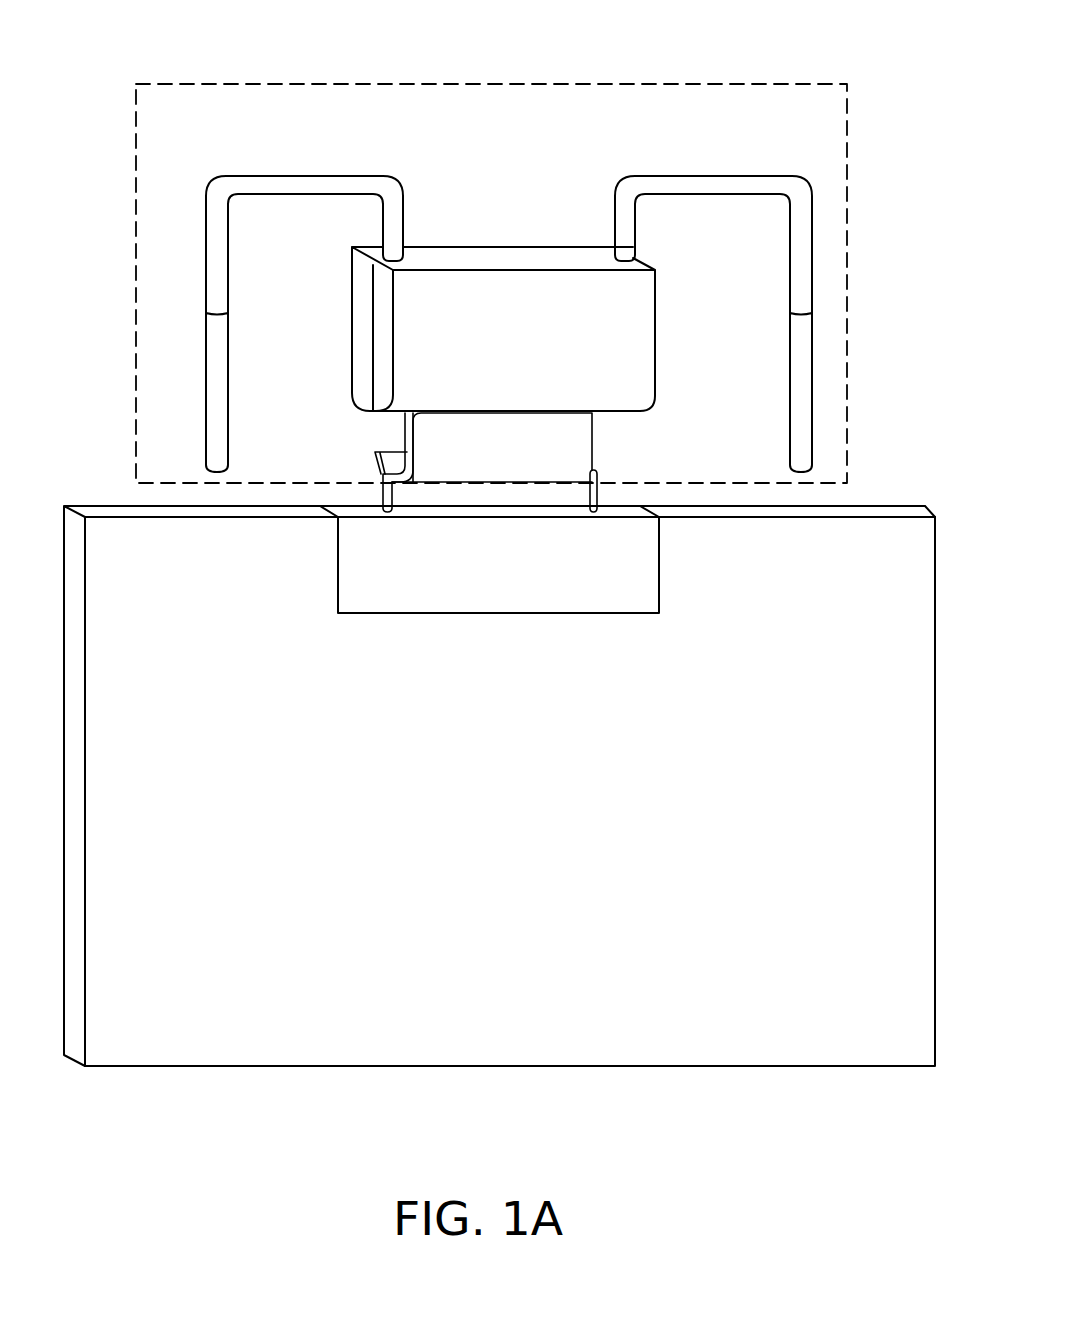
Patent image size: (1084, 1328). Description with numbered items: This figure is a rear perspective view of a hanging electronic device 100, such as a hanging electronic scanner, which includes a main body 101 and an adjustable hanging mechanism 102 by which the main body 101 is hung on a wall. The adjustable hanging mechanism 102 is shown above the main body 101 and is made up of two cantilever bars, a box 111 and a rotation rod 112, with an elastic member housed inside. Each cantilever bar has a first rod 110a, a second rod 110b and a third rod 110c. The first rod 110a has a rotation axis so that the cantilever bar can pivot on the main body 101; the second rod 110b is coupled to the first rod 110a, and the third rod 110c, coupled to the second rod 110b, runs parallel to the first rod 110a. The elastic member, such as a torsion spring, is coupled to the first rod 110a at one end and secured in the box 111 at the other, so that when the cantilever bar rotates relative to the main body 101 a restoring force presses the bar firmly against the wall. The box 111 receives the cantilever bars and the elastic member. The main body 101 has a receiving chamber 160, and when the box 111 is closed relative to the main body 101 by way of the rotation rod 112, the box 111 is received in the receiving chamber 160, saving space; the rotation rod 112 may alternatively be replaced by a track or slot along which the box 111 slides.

The hanging electronic device 100 is at (922, 50).
The main body 101 is at (797, 1017).
The adjustable hanging mechanism 102 is at (820, 242).
The first rod 110a is at (403, 227).
The second rod 110b is at (303, 176).
The third rod 110c is at (207, 255).
The box 111 is at (630, 357).
The rotation rod 112 is at (600, 490).
The receiving chamber 160 is at (508, 593).